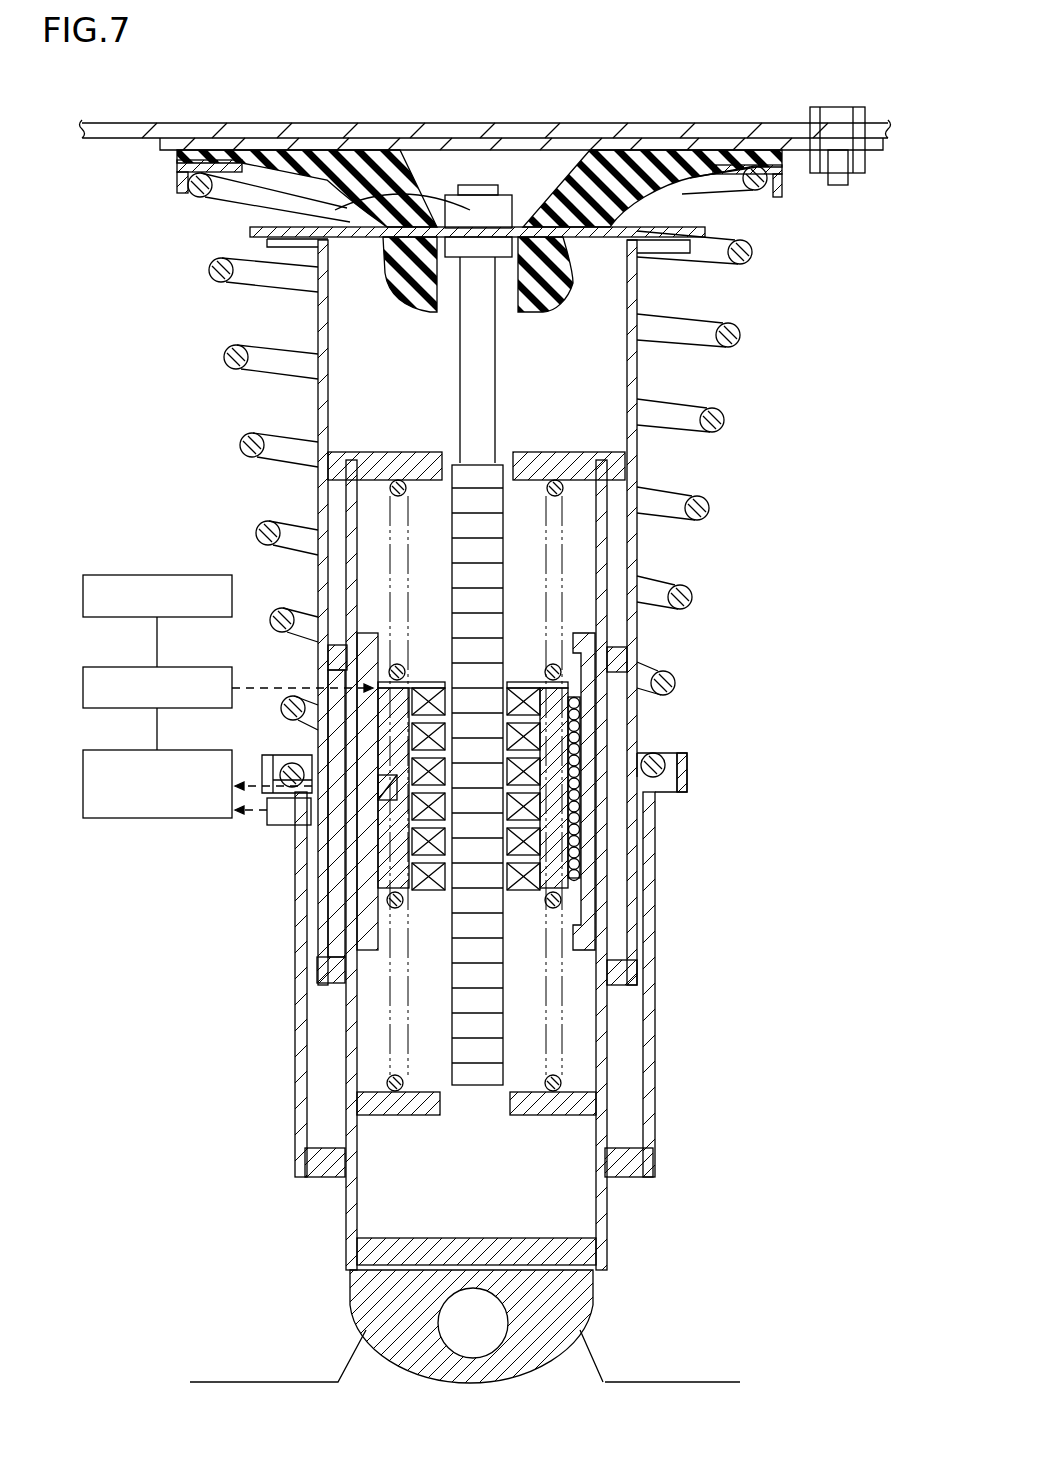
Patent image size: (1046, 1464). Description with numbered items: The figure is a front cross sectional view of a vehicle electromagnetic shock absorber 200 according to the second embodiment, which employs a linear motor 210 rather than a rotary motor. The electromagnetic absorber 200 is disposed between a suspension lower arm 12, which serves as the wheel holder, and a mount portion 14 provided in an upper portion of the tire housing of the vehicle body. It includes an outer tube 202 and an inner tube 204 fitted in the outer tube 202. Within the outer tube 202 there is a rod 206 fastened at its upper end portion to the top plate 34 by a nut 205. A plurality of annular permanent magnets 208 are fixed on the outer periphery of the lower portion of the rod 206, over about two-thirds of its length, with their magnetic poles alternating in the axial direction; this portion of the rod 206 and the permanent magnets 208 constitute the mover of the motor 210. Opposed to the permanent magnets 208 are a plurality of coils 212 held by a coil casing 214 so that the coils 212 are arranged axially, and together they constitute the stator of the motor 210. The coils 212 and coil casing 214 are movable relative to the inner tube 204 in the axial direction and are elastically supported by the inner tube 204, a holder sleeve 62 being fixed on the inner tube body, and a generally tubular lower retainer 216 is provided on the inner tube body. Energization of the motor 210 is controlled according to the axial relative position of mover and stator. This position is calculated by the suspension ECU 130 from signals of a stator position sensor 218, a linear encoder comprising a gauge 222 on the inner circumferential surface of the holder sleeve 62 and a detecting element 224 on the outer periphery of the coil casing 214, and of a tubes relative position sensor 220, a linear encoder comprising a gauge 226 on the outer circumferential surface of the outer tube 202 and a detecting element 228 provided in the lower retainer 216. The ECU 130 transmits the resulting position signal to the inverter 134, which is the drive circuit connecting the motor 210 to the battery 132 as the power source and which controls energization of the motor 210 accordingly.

The mount portion 14 is at (276, 114).
The nut 205 is at (472, 208).
The top plate 34 is at (700, 230).
The outer tube 202 is at (739, 281).
The rod 206 is at (470, 343).
The electromagnetic shock absorber 200 is at (781, 382).
The permanent magnets 208 is at (485, 570).
The battery 132 is at (105, 580).
The inverter 134 is at (102, 672).
The suspension electronic control unit 130 is at (102, 756).
The motor 210 is at (410, 660).
The holder sleeve 62 is at (587, 640).
The stator position sensor 218 is at (364, 766).
The coil casing 214 is at (553, 790).
The tubes relative position sensor 220 is at (249, 823).
The detecting element 228 is at (282, 826).
The detecting element 224 is at (378, 790).
The gauge 226 is at (313, 908).
The gauge 222 is at (372, 858).
The coils 212 is at (525, 885).
The inner tube 204 is at (714, 947).
The lower retainer 216 is at (640, 1162).
The suspension lower arm 12 is at (623, 1382).